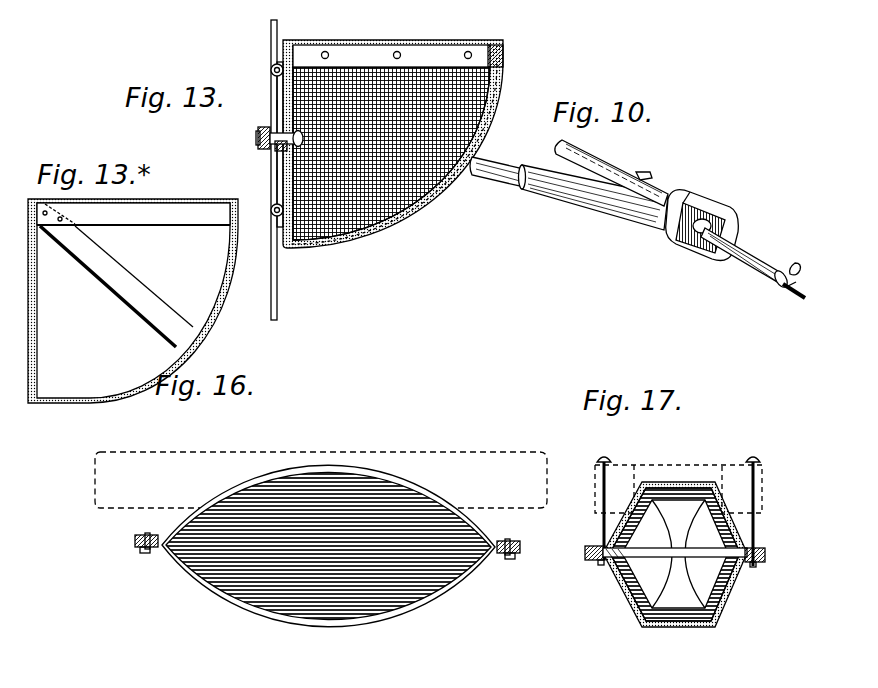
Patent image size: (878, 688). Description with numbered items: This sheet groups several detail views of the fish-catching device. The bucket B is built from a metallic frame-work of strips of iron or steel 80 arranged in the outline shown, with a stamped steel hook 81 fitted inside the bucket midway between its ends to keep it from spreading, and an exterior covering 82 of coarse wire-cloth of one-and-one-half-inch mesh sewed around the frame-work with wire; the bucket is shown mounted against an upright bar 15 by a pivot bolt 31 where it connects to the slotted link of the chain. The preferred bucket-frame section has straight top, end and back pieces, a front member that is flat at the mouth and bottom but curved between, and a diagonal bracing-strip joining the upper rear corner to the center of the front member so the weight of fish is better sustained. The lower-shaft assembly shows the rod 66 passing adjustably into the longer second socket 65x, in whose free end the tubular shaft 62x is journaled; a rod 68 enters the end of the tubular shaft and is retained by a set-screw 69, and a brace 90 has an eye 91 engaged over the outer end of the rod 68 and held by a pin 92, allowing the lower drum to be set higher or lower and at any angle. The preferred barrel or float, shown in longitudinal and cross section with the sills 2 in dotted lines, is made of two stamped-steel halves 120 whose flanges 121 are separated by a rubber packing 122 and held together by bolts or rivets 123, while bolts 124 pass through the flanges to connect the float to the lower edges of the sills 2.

In FIG. 13, the upright supporting bar 15 is at (268, 165).
In FIG. 13, the strips of iron or steel 80 is at (356, 45).
The strips of iron or steel 80 is at (165, 203).
In FIG. 13, the stamped steel hook 81 is at (492, 47).
In FIG. 13, the exterior covering 82 is at (422, 203).
In FIG. 13, the bucket B is at (391, 134).
In FIG. 13, the pivot bolt 31 is at (287, 139).
In FIG. 10, the rod 66 is at (509, 163).
In FIG. 10, the second socket 65x is at (615, 224).
In FIG. 10, the tubular shaft 62x is at (599, 163).
In FIG. 10, the set-screw 69 is at (650, 174).
In FIG. 10, the rod 68 is at (746, 266).
In FIG. 10, the eye 91 is at (779, 270).
In FIG. 10, the pin 92 is at (795, 263).
In FIG. 10, the brace 90 is at (794, 300).
In FIG. 16, the sill 2 is at (458, 462).
In FIG. 17, the sill 2 is at (620, 468).
In FIG. 16, the barrel half 120 is at (228, 481).
In FIG. 17, the barrel half 120 is at (668, 486).
In FIG. 16, the flange 121 is at (148, 533).
In FIG. 17, the flange 121 is at (590, 560).
In FIG. 16, the packing 122 is at (136, 546).
In FIG. 17, the packing 122 is at (590, 546).
In FIG. 16, the bolts or rivets 123 is at (150, 553).
In FIG. 17, the bolt 124 is at (606, 487).